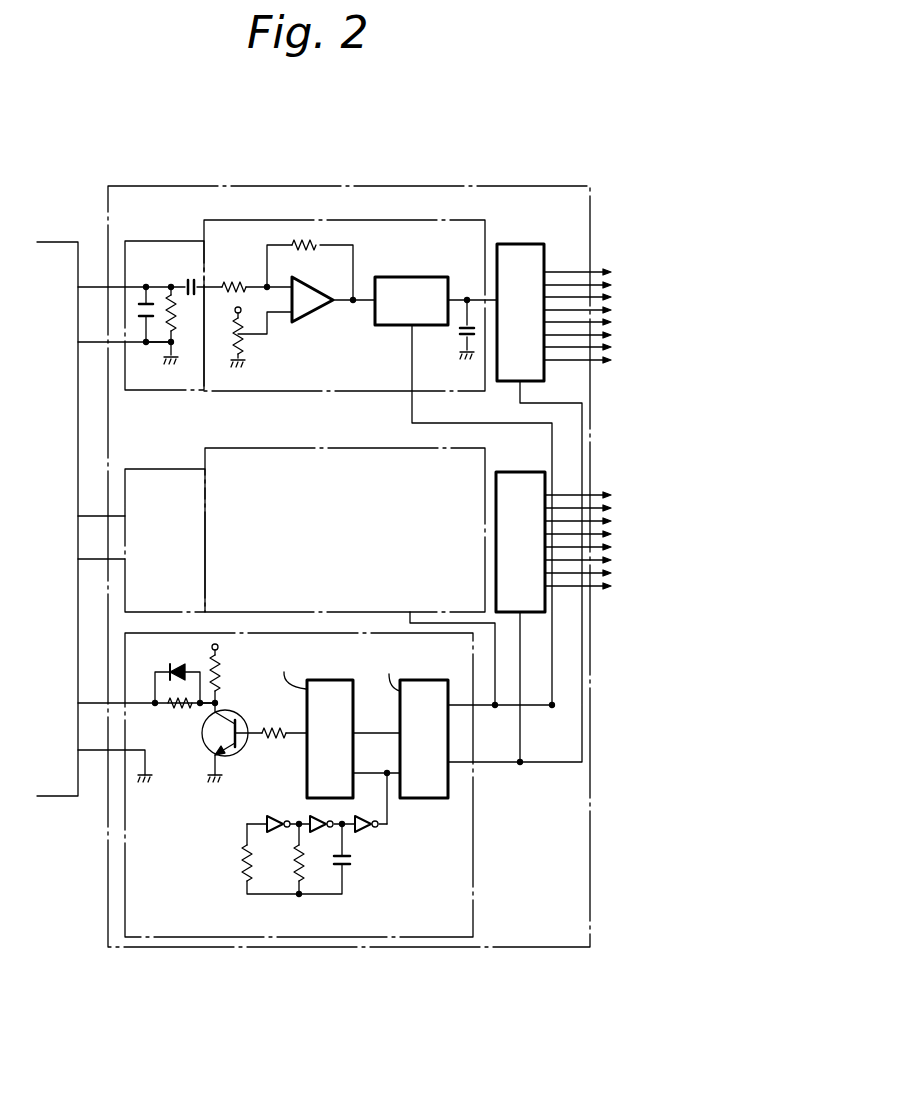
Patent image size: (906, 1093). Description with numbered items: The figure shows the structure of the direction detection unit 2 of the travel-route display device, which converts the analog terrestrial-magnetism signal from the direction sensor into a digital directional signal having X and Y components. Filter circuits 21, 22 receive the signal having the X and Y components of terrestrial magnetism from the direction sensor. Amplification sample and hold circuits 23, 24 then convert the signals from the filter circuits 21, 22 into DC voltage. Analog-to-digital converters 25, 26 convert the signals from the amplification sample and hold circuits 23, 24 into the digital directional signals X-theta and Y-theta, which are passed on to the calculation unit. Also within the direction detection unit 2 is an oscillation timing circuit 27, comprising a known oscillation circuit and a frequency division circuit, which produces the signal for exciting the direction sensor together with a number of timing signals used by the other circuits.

The direction detection unit 2 is at (353, 184).
The filter circuit 21 is at (133, 396).
The filter circuit 22 is at (160, 470).
The amplification sample and hold circuit 23 is at (276, 396).
The amplification sample and hold circuit 24 is at (352, 448).
The analog-to-digital converter 25 is at (526, 239).
The analog-to-digital converter 26 is at (510, 471).
The oscillation timing circuit 27 is at (473, 820).